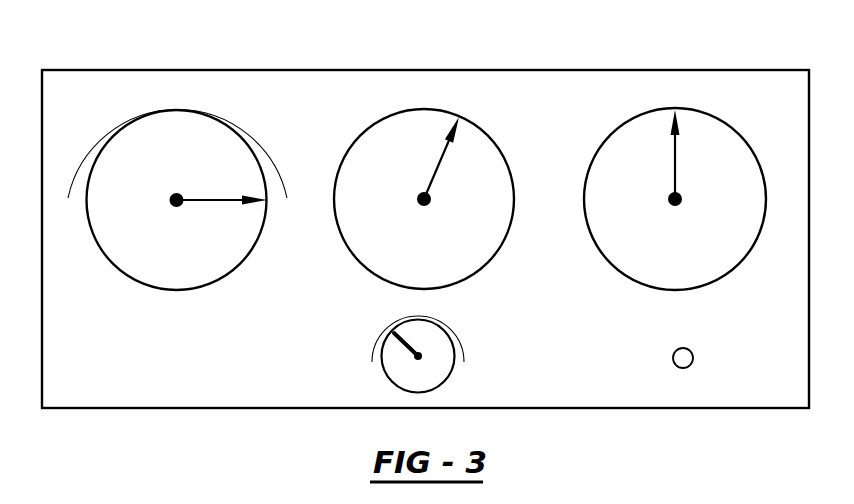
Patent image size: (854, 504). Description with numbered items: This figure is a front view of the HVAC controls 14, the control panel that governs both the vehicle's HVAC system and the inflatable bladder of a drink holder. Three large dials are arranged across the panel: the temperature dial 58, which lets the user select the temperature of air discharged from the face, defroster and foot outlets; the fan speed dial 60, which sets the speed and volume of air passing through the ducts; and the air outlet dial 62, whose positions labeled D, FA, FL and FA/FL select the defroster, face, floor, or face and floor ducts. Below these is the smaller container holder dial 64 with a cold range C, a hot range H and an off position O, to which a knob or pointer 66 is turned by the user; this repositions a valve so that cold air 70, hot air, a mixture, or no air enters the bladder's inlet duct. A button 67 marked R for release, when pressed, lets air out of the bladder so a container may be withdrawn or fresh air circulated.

The HVAC controls 14 is at (96, 48).
The temperature dial 58 is at (175, 289).
The fan speed dial 60 is at (345, 250).
The air outlet dial 62 is at (592, 240).
The container holder dial 64 is at (444, 384).
The pointer 66 is at (395, 333).
The button 67 is at (693, 355).
The cold air 70 is at (764, 492).